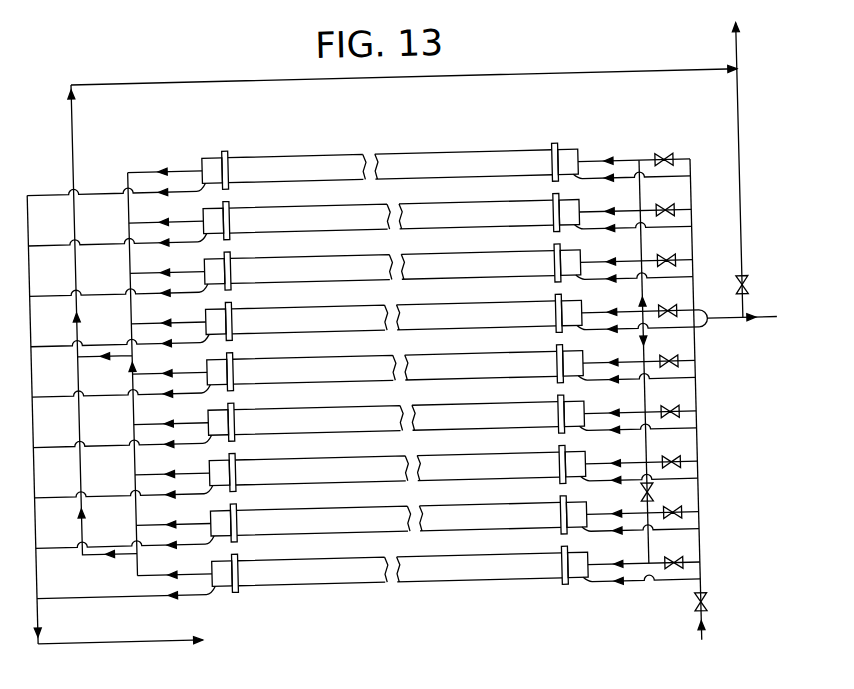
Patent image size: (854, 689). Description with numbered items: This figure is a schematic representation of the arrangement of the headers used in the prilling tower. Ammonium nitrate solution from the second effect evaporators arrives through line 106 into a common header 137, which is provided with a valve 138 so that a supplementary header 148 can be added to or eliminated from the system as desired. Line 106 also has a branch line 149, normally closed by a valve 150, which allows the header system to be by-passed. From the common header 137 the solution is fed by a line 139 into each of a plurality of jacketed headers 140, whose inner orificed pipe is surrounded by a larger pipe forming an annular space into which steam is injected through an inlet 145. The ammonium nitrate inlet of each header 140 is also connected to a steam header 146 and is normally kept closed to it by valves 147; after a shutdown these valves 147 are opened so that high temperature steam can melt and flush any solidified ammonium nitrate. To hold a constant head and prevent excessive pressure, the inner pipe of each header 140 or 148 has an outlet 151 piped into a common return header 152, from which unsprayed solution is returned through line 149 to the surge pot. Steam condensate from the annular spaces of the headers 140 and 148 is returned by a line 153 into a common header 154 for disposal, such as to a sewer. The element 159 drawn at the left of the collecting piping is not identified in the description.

The line 106 is at (762, 334).
The common header 137 is at (638, 370).
The valve 138 is at (643, 506).
The line 139 is at (612, 170).
The jacketed header 140 is at (479, 158).
The inlet 145 is at (576, 186).
The steam header 146 is at (688, 217).
The valve 147 is at (664, 166).
The supplementary header 148 is at (465, 514).
The branch line 149 is at (737, 72).
The valve 150 is at (740, 298).
The outlet 151 is at (191, 175).
The common return header 152 is at (70, 146).
The line 153 is at (86, 181).
The common header 154 is at (117, 644).
The discharge header 159 is at (25, 547).